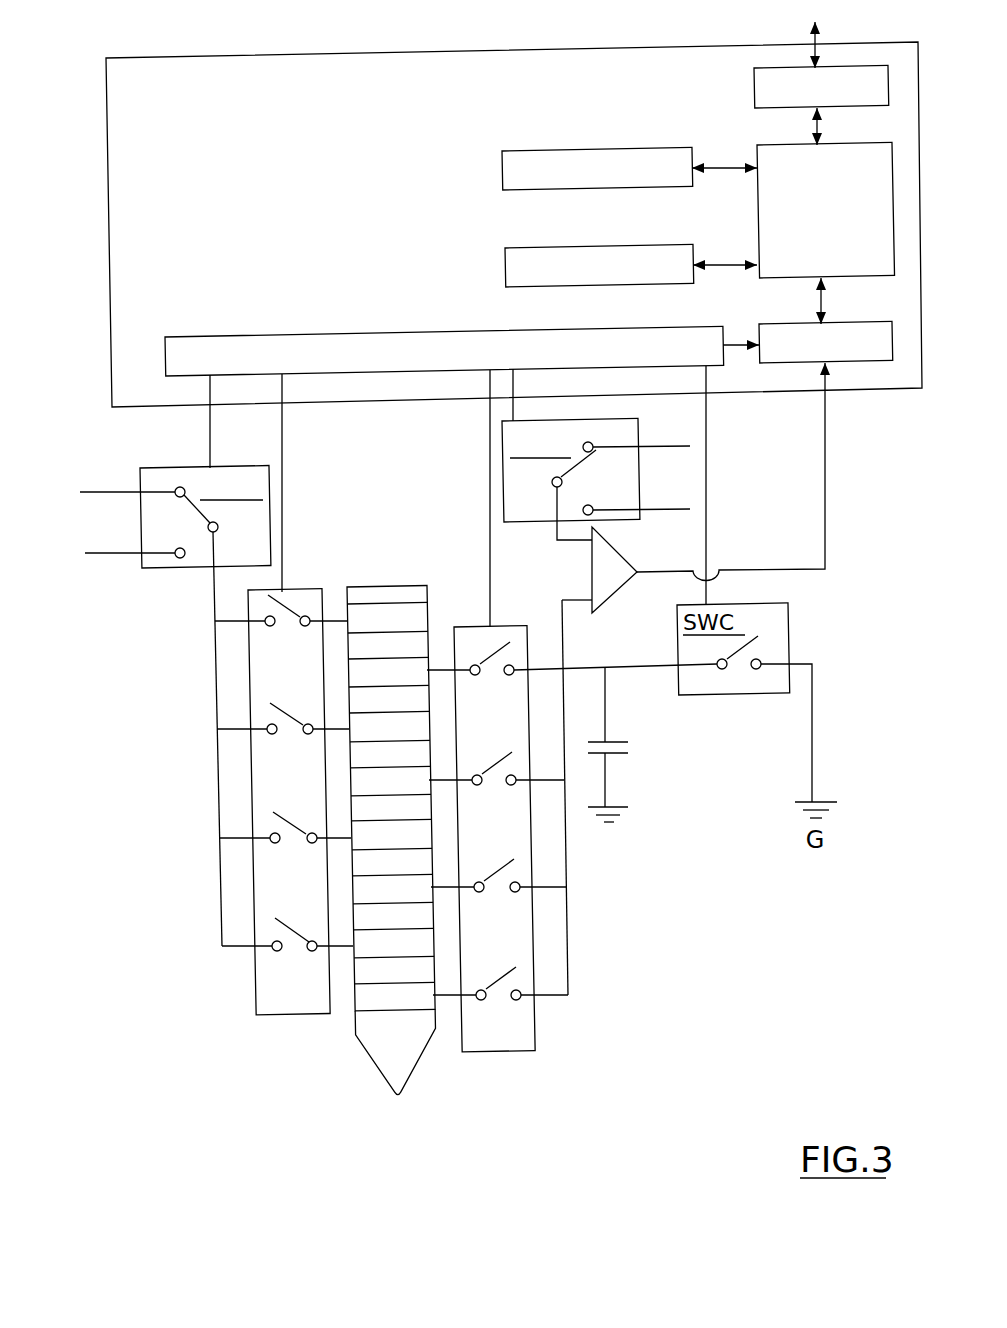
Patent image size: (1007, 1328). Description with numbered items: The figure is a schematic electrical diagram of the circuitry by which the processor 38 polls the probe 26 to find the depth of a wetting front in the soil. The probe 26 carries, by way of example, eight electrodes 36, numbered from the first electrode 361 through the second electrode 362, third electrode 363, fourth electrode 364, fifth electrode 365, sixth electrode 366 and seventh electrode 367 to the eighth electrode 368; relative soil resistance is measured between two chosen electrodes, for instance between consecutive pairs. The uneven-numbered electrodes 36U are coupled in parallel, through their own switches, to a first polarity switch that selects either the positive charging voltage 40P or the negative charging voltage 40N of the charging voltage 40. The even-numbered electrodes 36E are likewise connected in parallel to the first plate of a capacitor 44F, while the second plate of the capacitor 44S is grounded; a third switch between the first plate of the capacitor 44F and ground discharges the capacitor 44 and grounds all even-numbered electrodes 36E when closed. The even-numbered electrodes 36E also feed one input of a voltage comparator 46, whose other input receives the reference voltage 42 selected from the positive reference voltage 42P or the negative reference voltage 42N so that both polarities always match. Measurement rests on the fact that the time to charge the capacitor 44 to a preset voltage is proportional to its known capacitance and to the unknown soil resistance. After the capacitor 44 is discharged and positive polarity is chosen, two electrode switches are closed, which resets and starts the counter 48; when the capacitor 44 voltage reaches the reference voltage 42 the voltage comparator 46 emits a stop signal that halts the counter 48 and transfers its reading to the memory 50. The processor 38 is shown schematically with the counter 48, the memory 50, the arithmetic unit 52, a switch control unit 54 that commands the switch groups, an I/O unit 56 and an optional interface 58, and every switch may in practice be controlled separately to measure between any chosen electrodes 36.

The processor 38 is at (205, 56).
The I/O unit 56 is at (754, 98).
The interface 58 is at (502, 172).
The arithmetic unit 52 is at (505, 274).
The memory 50 is at (757, 184).
The counter 48 is at (777, 323).
The switch control unit 54 is at (270, 335).
The charging voltage 40 is at (117, 537).
The positive charging voltage 40P is at (130, 490).
The negative charging voltage 40N is at (130, 558).
The reference voltage 42 is at (690, 493).
The positive reference voltage 42P is at (645, 445).
The negative reference voltage 42N is at (645, 512).
The voltage comparator 46 is at (624, 585).
The probe 26 is at (379, 816).
The electrode 36 is at (368, 1000).
The uneven-numbered electrodes 36U is at (293, 1017).
The even-numbered electrodes 36E is at (537, 1038).
The capacitor 44 is at (717, 748).
The first plate of the capacitor 44F is at (618, 742).
The second plate of the capacitor 44S is at (617, 755).
The first electrode 361 is at (387, 617).
The second electrode 362 is at (388, 672).
The third electrode 363 is at (389, 726).
The fourth electrode 364 is at (390, 781).
The fifth electrode 365 is at (391, 834).
The sixth electrode 366 is at (393, 889).
The seventh electrode 367 is at (394, 943).
The eighth electrode 368 is at (395, 996).